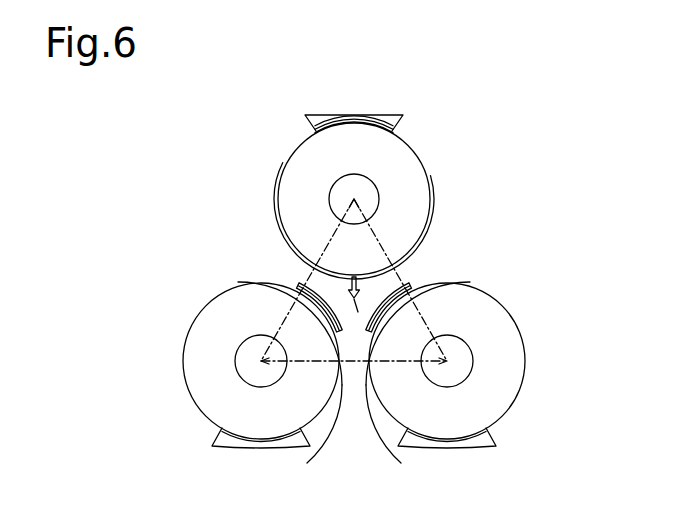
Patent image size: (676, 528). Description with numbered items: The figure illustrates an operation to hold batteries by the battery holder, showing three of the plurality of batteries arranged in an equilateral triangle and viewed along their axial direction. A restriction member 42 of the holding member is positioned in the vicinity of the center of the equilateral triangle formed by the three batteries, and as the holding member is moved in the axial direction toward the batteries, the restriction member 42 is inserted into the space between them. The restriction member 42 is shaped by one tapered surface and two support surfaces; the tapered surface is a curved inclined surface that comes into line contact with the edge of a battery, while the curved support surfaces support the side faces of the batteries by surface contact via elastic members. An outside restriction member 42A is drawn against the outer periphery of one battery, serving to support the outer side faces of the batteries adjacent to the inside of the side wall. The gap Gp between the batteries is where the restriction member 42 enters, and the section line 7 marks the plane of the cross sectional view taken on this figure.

The restriction member 42 is at (298, 286).
The outside restriction member 42A is at (398, 113).
The gap Gp is at (300, 297).
The line 7- 7 is at (353, 105).